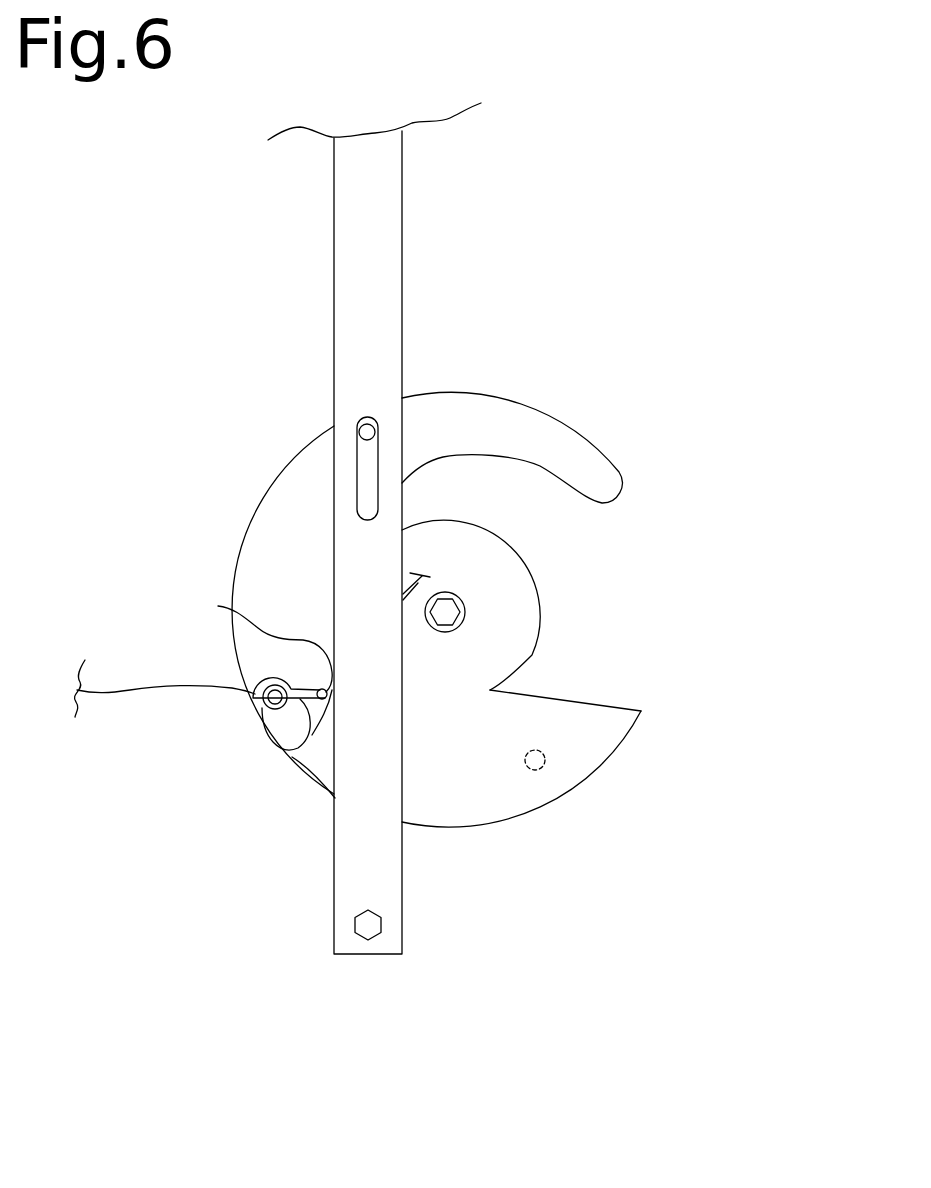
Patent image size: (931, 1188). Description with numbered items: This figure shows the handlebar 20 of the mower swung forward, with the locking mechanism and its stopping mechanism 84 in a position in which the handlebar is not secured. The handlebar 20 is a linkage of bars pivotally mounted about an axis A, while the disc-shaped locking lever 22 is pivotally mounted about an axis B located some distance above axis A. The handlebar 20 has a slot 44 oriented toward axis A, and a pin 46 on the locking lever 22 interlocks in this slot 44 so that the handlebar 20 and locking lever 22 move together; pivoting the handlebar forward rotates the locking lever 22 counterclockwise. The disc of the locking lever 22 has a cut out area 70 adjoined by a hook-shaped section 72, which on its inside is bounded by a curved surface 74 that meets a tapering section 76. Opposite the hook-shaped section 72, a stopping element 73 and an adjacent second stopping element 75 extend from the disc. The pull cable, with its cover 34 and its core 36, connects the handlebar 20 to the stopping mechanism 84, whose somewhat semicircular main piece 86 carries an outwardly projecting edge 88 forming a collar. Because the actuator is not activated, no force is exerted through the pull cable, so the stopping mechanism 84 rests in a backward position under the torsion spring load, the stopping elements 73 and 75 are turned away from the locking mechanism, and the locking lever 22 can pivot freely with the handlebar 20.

The handlebar 20 is at (382, 202).
The locking lever 22 is at (495, 742).
The cover 34 is at (298, 645).
The core 36 is at (150, 688).
The slot 44 is at (367, 496).
The pin 46 is at (375, 432).
The cut out area 70 is at (682, 624).
The hook-shaped section 72 is at (575, 446).
The stopping element 73 is at (530, 768).
The curved surface 74 is at (500, 485).
The second stopping element 75 is at (545, 754).
The tapering section 76 is at (558, 526).
The stopping mechanism 84 is at (260, 659).
The main piece 86 is at (265, 708).
The outwardly projecting edge 88 is at (313, 700).
The axis A is at (373, 928).
The axis B is at (446, 610).